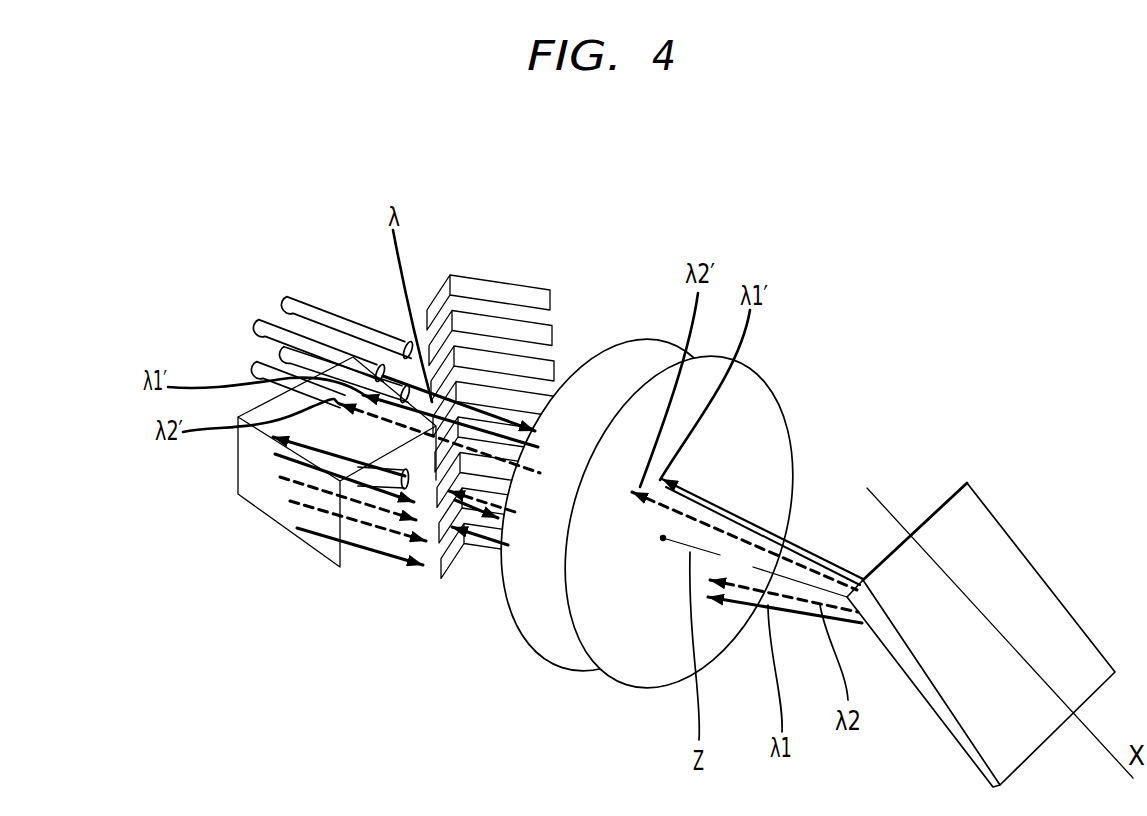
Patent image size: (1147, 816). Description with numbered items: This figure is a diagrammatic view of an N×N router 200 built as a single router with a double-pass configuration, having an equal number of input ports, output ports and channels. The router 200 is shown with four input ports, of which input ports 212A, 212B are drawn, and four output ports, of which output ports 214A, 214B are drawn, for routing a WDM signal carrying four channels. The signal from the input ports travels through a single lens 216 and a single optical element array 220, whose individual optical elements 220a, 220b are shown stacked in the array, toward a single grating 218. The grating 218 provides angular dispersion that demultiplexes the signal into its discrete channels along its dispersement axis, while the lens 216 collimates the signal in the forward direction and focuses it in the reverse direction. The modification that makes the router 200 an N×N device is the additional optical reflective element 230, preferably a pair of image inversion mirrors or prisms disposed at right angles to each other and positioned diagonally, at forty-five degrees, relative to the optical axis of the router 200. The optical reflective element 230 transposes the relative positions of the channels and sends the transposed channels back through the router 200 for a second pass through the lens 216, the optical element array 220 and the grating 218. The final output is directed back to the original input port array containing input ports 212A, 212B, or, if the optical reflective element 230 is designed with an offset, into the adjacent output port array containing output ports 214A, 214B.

The N×N router 200 is at (968, 372).
The input port 212A is at (289, 306).
The input port 212B is at (285, 357).
The output port 214A is at (286, 350).
The output port 214B is at (258, 373).
The lens 216 is at (652, 353).
The grating 218 is at (1028, 585).
The optical element array 220 is at (511, 360).
The filter element 220a is at (473, 288).
The filter element 220b is at (568, 332).
The optical reflective element 230 is at (254, 496).